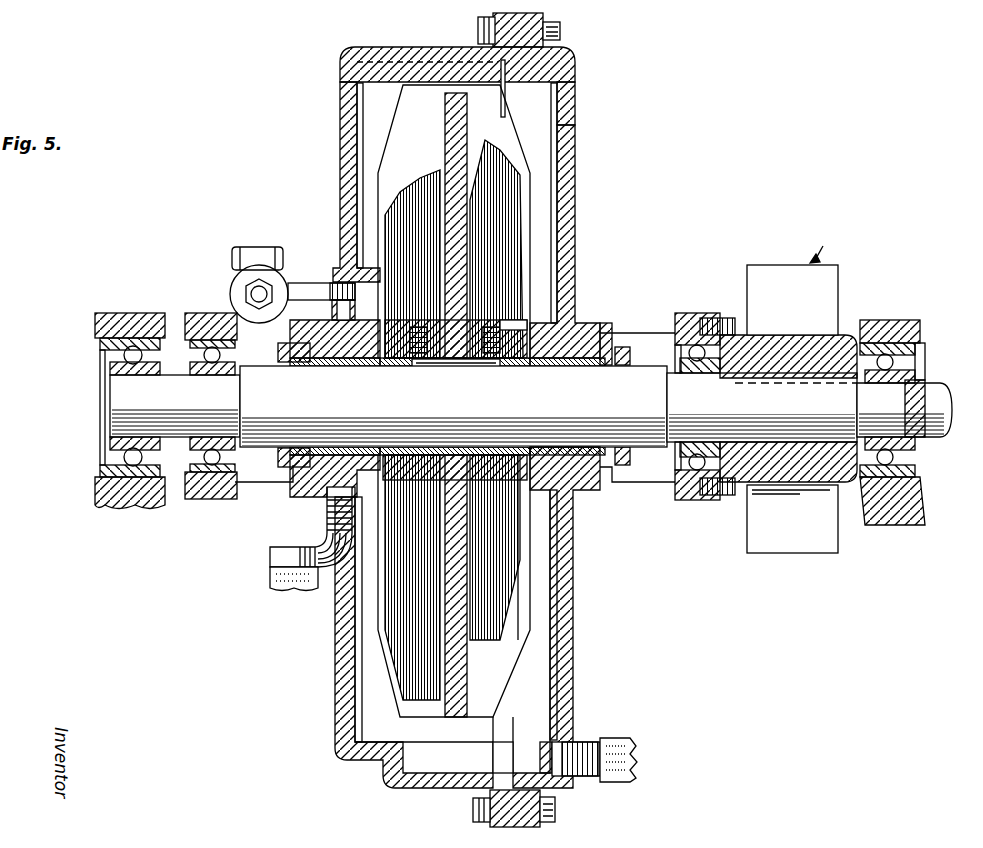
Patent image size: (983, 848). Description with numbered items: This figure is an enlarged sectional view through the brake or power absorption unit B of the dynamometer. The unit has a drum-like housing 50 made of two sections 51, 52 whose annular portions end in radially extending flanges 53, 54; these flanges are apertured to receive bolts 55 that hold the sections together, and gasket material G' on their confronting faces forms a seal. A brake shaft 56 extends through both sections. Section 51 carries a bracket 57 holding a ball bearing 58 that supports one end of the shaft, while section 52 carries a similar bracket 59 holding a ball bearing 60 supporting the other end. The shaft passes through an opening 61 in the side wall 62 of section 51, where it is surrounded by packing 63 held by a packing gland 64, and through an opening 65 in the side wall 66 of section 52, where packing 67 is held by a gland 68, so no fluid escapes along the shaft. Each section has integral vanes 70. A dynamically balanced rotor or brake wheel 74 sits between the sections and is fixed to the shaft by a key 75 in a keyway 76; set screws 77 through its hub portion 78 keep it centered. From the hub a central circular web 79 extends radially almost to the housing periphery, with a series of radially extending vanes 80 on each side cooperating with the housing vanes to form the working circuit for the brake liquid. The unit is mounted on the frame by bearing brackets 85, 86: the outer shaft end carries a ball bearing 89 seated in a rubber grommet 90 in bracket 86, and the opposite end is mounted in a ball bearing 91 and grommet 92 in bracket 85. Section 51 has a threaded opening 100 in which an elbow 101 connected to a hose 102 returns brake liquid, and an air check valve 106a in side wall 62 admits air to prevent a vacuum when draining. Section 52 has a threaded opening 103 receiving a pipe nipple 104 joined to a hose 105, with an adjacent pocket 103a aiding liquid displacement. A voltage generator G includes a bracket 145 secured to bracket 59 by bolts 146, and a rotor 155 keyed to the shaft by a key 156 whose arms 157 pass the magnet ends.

The drum-like casing or housing 50 is at (575, 100).
The housing section 51 is at (340, 70).
The housing section 52 is at (575, 155).
The radially extending flange 53 is at (478, 24).
The radially extending flange 54 is at (555, 13).
The bolts 55 is at (478, 37).
The brake shaft 56 is at (643, 365).
The bracket 57 is at (251, 478).
The ball bearing 58 is at (205, 499).
The bracket 59 is at (648, 483).
The ball bearing 60 is at (684, 500).
The opening 61 is at (375, 368).
The side wall 62 is at (338, 665).
The packing 63 is at (342, 448).
The packing gland 64 is at (285, 468).
The opening 65 is at (536, 367).
The side wall 66 is at (573, 660).
The packing 67 is at (568, 366).
The gland 68 is at (622, 346).
The integral vanes 70 is at (360, 190).
The power absorption rotor or brake wheel 74 is at (518, 238).
The key 75 is at (455, 371).
The keyway 76 is at (385, 367).
The set screws 77 is at (422, 327).
The hub portion 78 is at (518, 322).
The central circular web 79 is at (466, 668).
The radially extending vanes 80 is at (395, 225).
The bearing bracket 85 is at (890, 320).
The bearing bracket 86 is at (105, 313).
The ball bearing 89 is at (108, 357).
The rubber grommet or noise insulator 90 is at (136, 342).
The ball bearing 91 is at (925, 360).
The rubber grommet 92 is at (923, 350).
The threaded opening 100 is at (345, 580).
The elbow 101 is at (283, 532).
The section of hose 102 is at (273, 580).
The threaded opening 103 is at (580, 735).
The pipe nipple 104 is at (600, 742).
The hose 105 is at (637, 760).
The pocket 103a is at (560, 782).
The air check valve 106a is at (258, 247).
The bracket 145 is at (725, 318).
The bolts 146 is at (733, 316).
The rotor 155 is at (790, 335).
The key 156 is at (812, 385).
The arms 157 is at (774, 265).
The brake or power absorption unit B is at (338, 150).
The voltage generator G is at (825, 246).
The gasket material G' is at (481, 761).